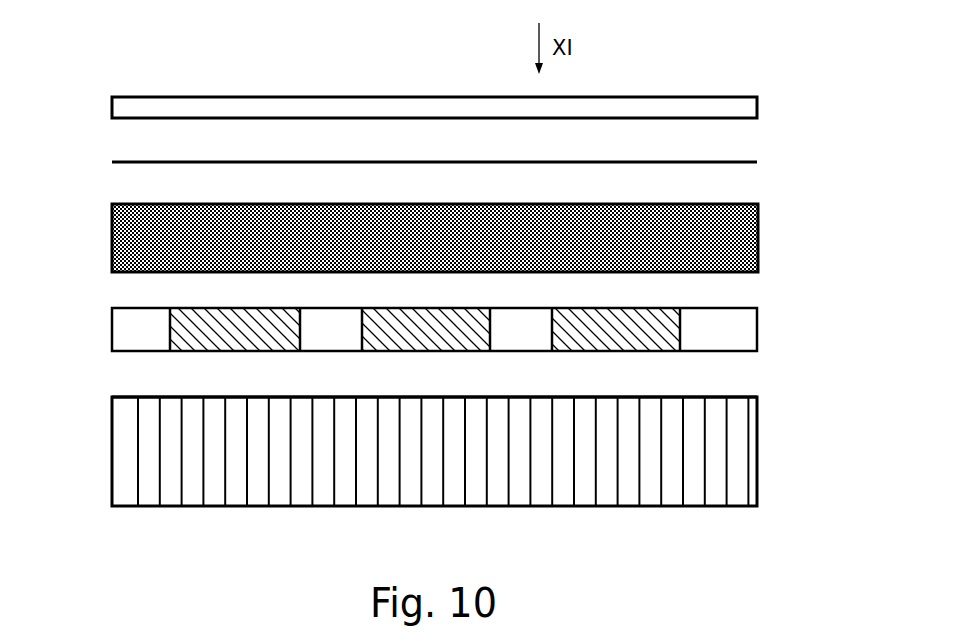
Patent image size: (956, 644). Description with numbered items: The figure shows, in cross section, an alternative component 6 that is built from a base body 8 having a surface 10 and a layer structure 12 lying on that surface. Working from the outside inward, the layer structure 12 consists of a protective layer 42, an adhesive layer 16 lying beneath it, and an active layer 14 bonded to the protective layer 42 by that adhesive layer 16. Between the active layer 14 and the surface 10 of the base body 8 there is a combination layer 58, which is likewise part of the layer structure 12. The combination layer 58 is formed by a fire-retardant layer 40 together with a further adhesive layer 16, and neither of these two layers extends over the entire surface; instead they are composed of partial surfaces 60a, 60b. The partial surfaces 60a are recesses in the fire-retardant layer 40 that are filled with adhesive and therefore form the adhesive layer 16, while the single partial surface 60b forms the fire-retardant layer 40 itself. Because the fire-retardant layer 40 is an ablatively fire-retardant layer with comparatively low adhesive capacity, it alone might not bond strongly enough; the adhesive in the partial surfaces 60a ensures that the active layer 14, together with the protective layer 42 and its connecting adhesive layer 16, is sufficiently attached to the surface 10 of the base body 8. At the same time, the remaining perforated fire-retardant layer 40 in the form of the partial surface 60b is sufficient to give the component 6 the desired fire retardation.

The component 6 is at (220, 542).
The base body 8 is at (757, 466).
The surface 10 is at (140, 397).
The layer structure 12 is at (247, 68).
The active layer 14 is at (758, 240).
The adhesive layer 16 is at (757, 162).
The fire-retardant layer 40 is at (425, 347).
The protective layer 42 is at (757, 110).
The combination layer 58 is at (470, 331).
The partial surfaces 60a is at (300, 327).
The partial surface 60b is at (333, 352).